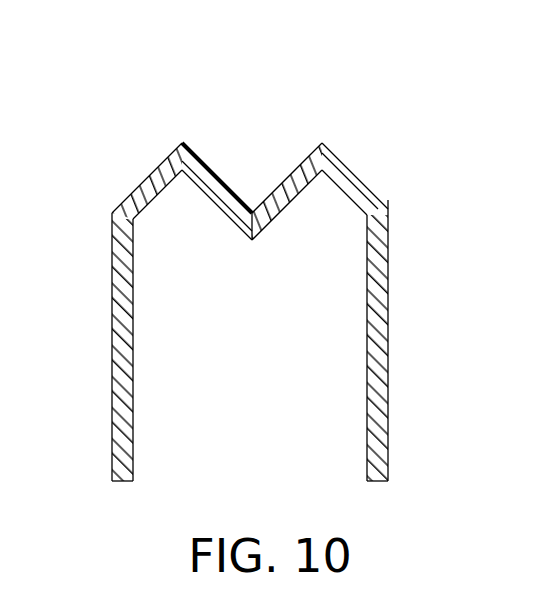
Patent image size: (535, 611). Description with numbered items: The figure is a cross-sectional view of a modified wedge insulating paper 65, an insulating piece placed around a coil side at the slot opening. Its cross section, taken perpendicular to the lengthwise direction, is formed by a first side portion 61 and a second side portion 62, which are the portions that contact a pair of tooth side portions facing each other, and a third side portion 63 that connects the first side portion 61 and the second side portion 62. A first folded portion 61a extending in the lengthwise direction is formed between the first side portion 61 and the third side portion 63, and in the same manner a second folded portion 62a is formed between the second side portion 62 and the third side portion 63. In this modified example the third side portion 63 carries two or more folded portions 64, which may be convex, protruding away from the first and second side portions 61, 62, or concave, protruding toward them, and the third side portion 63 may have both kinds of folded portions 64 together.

The first side portion 61 is at (388, 342).
The first folded portion 61a is at (388, 212).
The second side portion 62 is at (112, 342).
The second folded portion 62a is at (112, 212).
The third side portion 63 is at (345, 70).
The folded portions 64 is at (183, 141).
The wedge insulating paper 65 is at (376, 180).